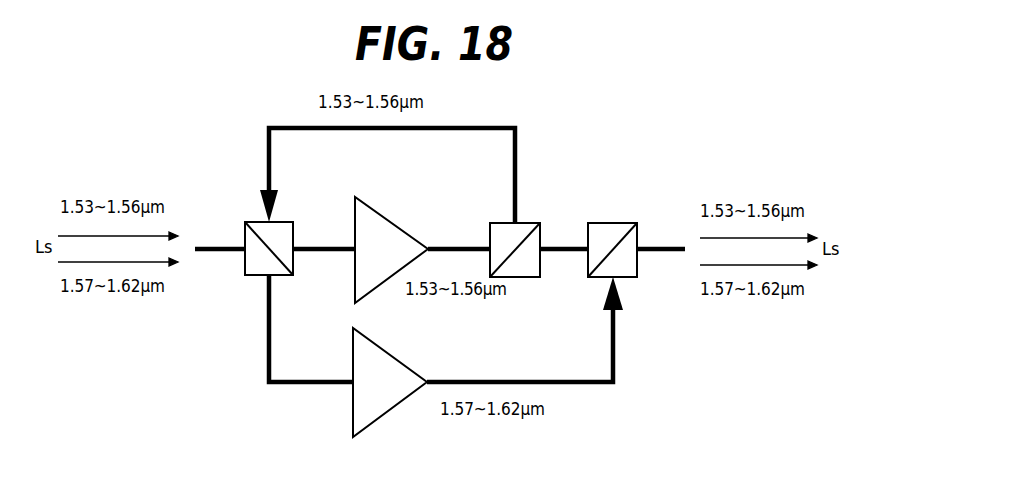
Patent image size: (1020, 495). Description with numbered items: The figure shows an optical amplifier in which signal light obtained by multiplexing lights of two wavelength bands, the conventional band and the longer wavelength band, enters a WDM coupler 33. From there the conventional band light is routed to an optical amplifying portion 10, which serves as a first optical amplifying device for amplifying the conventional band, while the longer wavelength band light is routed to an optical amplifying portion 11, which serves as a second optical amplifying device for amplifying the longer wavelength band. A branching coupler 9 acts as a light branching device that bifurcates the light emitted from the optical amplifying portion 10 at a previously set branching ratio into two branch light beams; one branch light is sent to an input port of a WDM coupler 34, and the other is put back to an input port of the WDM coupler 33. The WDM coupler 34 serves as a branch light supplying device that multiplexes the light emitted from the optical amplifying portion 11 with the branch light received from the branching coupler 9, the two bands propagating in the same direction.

The WDM coupler 33 is at (245, 222).
The WDM coupler 34 is at (638, 223).
The branching coupler 9 is at (540, 223).
The optical amplifying portion 10 is at (406, 228).
The optical amplifying portion 11 is at (406, 363).